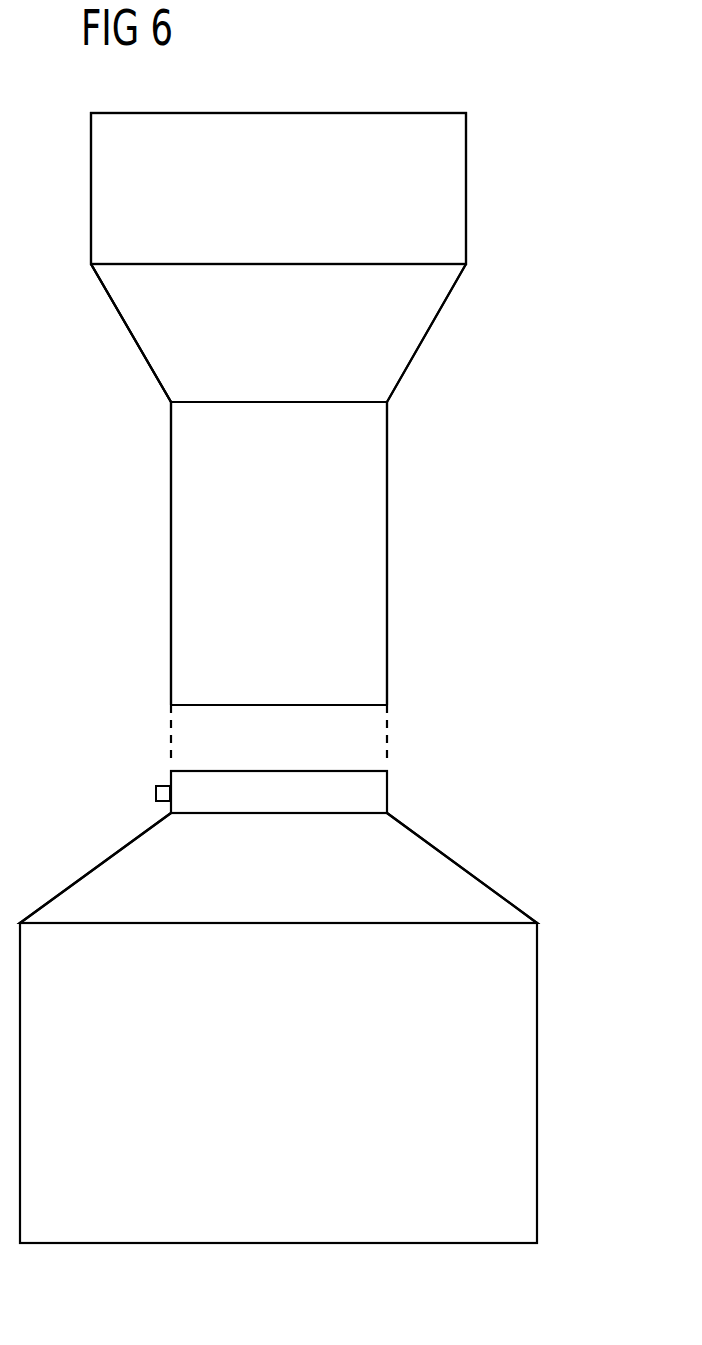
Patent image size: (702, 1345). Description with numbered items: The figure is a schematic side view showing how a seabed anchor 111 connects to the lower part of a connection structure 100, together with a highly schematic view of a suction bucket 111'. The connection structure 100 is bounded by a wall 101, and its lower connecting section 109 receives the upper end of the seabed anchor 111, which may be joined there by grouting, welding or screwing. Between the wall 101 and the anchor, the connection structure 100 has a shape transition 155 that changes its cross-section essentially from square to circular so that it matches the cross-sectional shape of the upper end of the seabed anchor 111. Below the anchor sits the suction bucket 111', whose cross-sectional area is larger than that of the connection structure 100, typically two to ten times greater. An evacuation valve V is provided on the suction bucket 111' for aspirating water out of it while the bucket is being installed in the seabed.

The connection structure 100 is at (485, 155).
The wall 101 is at (457, 195).
The shape transition 155 is at (143, 333).
The lower connecting section 109 is at (438, 357).
The seabed anchor 111 is at (340, 553).
The suction bucket 111' is at (285, 868).
The evacuation valve V is at (156, 793).